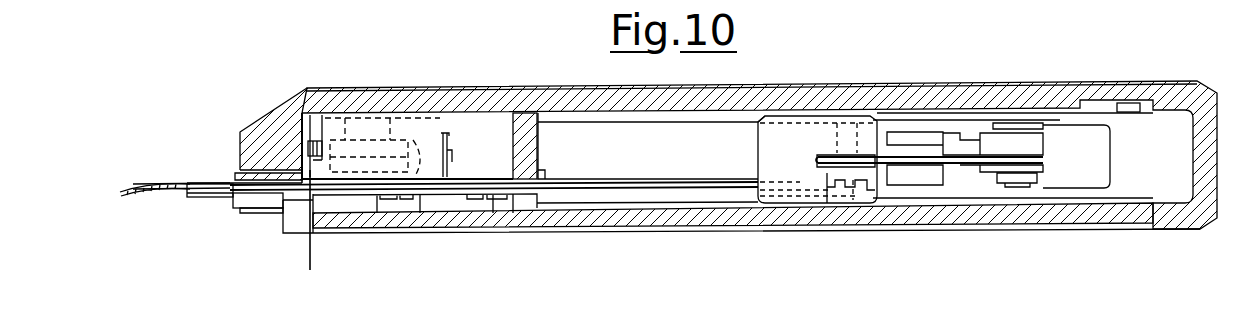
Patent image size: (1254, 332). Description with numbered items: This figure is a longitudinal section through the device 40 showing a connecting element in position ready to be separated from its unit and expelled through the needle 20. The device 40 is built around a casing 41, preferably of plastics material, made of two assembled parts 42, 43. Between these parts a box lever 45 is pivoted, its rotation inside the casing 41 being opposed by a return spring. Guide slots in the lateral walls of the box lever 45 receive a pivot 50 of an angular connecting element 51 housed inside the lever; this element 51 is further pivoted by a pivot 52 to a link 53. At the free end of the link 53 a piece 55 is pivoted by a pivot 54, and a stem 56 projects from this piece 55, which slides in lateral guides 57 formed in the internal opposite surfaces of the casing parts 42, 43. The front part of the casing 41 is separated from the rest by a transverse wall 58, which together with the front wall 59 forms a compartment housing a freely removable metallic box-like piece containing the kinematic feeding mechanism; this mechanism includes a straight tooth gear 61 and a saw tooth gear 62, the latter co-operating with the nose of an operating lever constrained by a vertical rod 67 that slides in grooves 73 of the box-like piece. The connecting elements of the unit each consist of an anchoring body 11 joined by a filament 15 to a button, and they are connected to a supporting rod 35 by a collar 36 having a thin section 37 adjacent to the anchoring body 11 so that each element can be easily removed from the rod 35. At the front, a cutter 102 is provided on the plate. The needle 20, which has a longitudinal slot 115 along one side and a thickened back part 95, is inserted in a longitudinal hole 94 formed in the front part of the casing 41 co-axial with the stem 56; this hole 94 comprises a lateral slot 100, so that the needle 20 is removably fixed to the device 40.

The anchoring body 11 is at (283, 219).
The filament 15 is at (313, 266).
The needle 20 is at (124, 197).
The supporting rod 35 is at (306, 166).
The collar 36 is at (248, 175).
The thin section 37 is at (322, 168).
The device 40 is at (893, 72).
The casing 41 is at (852, 86).
The casing part 42 is at (1050, 216).
The casing part 43 is at (1015, 96).
The box lever 45 is at (1062, 125).
The pivot 50 is at (916, 205).
The angular connecting element 51 is at (964, 171).
The pivot 52 is at (1016, 184).
The link 53 is at (954, 155).
The pivot 54 is at (848, 205).
The piece 55 is at (803, 133).
The stem 56 is at (692, 178).
The lateral guides 57 is at (601, 122).
The transverse wall 58 is at (528, 131).
The front wall 59 is at (253, 132).
The straight tooth gear 61 is at (424, 147).
The saw tooth gear 62 is at (390, 128).
The vertical rod 67 is at (451, 158).
The grooves 73 is at (442, 132).
The longitudinal hole 94 is at (233, 176).
The thickened part 95 is at (170, 191).
The lateral slot 100 is at (242, 205).
The cutter 102 is at (262, 211).
The longitudinal slot 115 is at (187, 197).